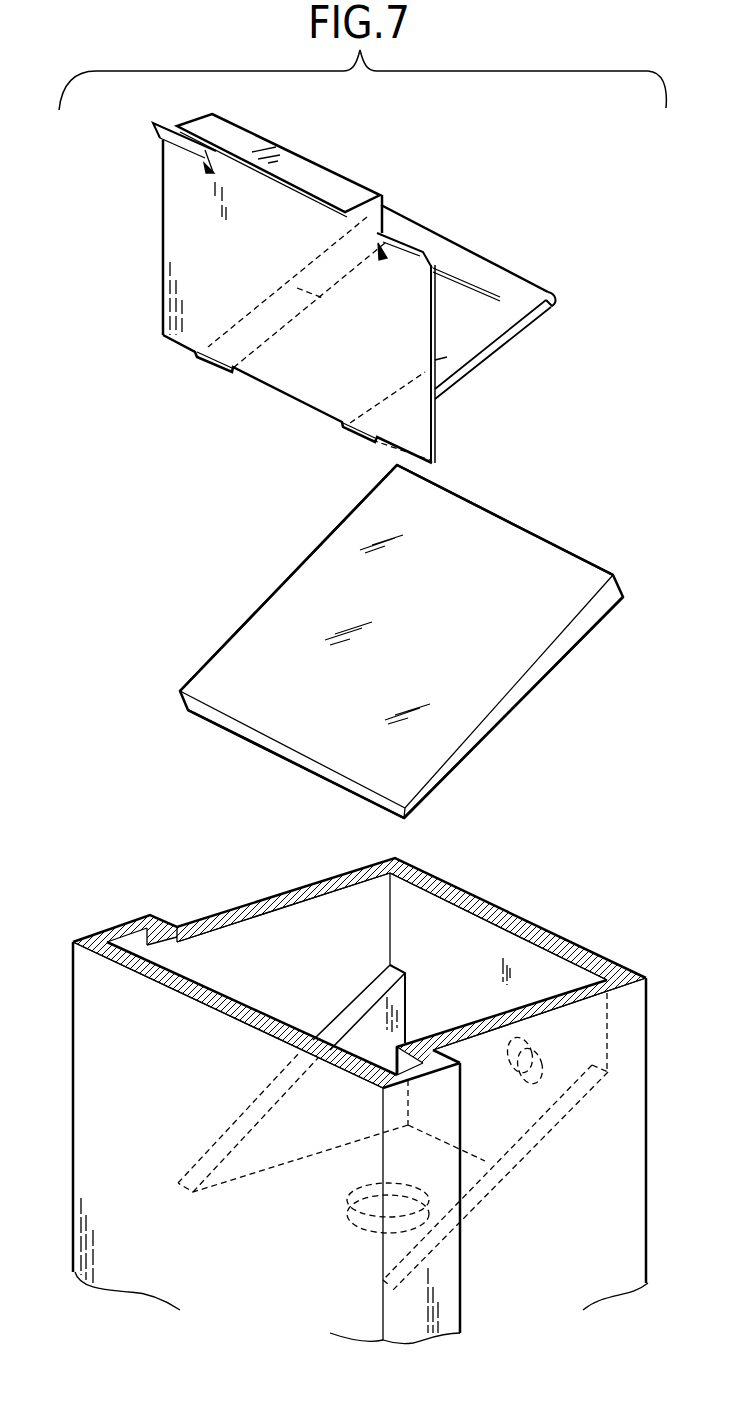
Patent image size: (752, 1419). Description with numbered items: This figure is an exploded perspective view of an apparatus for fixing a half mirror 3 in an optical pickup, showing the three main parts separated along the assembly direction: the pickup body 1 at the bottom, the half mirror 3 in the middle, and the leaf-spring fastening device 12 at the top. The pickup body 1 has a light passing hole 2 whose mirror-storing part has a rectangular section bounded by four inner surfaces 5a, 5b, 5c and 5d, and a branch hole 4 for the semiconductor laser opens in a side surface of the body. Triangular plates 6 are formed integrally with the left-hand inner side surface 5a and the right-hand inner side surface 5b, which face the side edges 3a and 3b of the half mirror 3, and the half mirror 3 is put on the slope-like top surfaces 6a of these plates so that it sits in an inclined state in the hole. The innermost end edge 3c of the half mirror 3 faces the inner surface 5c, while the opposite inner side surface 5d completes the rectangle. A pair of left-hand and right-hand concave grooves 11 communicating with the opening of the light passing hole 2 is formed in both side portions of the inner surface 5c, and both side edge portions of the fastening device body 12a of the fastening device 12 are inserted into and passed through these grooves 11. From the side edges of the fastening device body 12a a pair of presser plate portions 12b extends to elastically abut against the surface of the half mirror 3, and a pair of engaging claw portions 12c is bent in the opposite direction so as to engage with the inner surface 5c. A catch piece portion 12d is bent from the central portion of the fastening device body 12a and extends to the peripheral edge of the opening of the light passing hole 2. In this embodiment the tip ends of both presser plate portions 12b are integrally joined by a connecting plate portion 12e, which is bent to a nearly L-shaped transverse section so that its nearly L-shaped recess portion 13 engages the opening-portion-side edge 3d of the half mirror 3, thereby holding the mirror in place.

The pickup body 1 is at (90, 933).
The light passing hole 2 is at (470, 937).
The half mirror 3 is at (523, 515).
The side edge 3a is at (292, 575).
The side edge 3b is at (525, 683).
The innermost end edge 3c is at (278, 747).
The opening-portion-side edge 3d is at (570, 550).
The branch hole 4 is at (540, 1058).
The left-hand inner side surface 5a is at (227, 968).
The right-hand inner side surface 5b is at (466, 1024).
The inner surface 5c is at (258, 1006).
The inner side surface 5d is at (528, 960).
The triangular plate 6 is at (402, 1013).
The slope-like top surface 6a is at (352, 1012).
The concave groove 11 is at (137, 939).
The fastening device 12 is at (423, 199).
The fastening device body 12a is at (178, 228).
The presser plate portion 12b is at (250, 323).
The engaging claw portion 12c is at (158, 133).
The catch piece portion 12d is at (292, 160).
The connecting plate portion 12e is at (480, 257).
The recess portion 13 is at (547, 312).